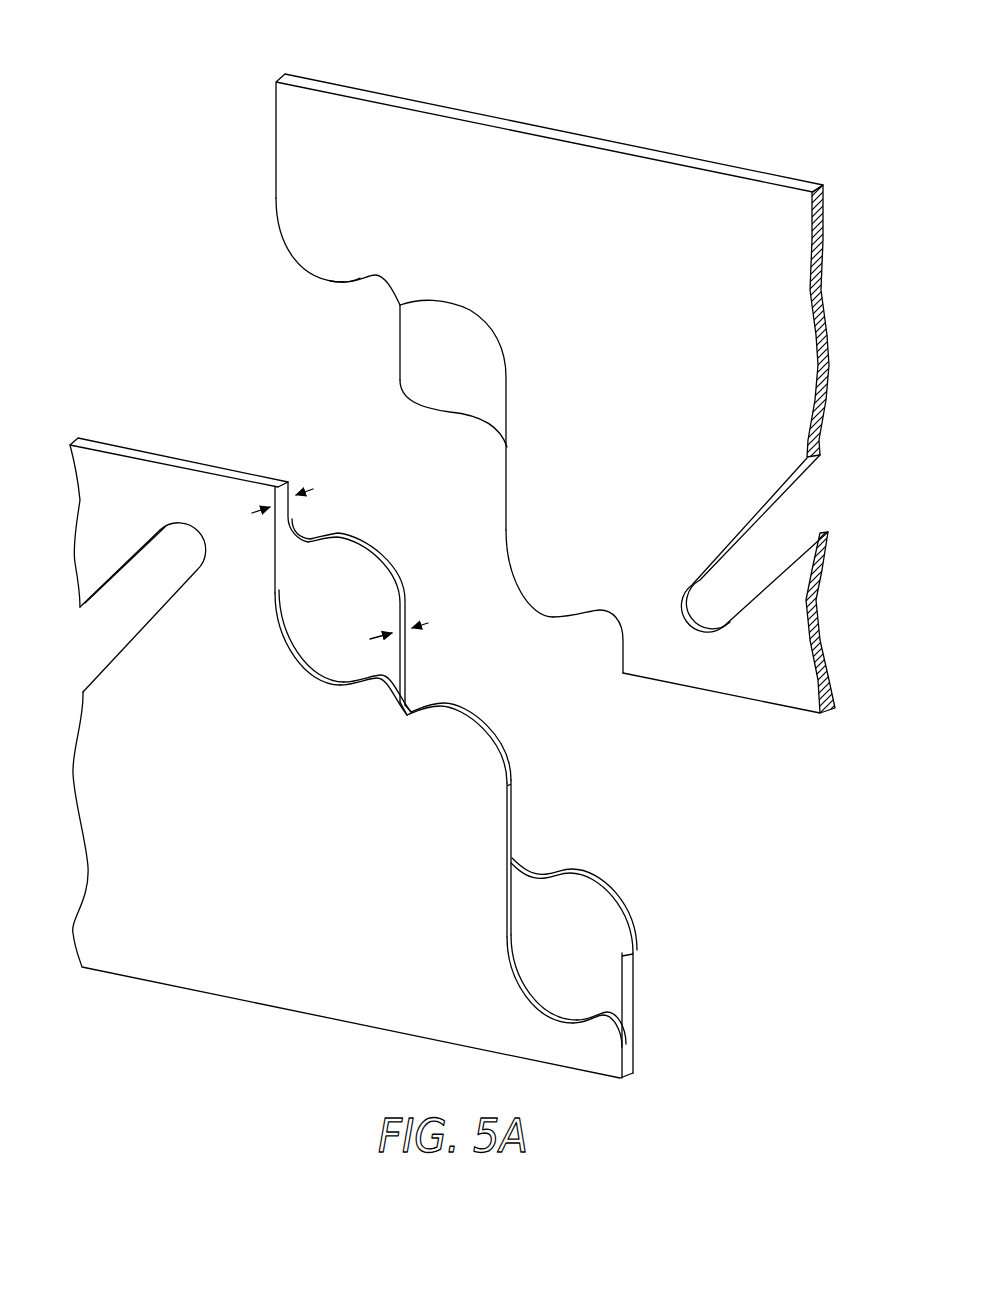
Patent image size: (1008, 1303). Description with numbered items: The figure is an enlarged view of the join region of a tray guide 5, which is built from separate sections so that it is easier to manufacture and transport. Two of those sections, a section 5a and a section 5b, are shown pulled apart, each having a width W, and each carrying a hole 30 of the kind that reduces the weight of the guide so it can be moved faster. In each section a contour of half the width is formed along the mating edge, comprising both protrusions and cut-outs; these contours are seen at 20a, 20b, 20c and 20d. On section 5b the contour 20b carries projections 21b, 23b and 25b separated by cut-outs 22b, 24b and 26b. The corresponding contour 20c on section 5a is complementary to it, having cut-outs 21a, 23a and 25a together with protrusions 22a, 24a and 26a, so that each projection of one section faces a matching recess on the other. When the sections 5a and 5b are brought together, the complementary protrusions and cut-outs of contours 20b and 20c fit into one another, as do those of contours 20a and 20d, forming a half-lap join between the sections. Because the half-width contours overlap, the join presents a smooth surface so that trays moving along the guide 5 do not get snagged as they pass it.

The tray guide 5 is at (262, 57).
The section 5a is at (112, 460).
The section 5b is at (572, 150).
The contour 20a is at (455, 424).
The contour 20b is at (290, 244).
The contour 20c is at (524, 772).
The contour 20d is at (402, 563).
The cut-out 21a is at (315, 688).
The projection 21b is at (316, 280).
The protrusion 22a is at (372, 685).
The cut-out 22b is at (375, 277).
The cut-out 23a is at (405, 718).
The projection 23b is at (415, 308).
The protrusion 24a is at (450, 705).
The cut-out 24b is at (478, 302).
The cut-out 25a is at (545, 1020).
The projection 25b is at (550, 617).
The protrusion 26a is at (608, 1012).
The cut-out 26b is at (606, 610).
The hole 30 is at (178, 546).